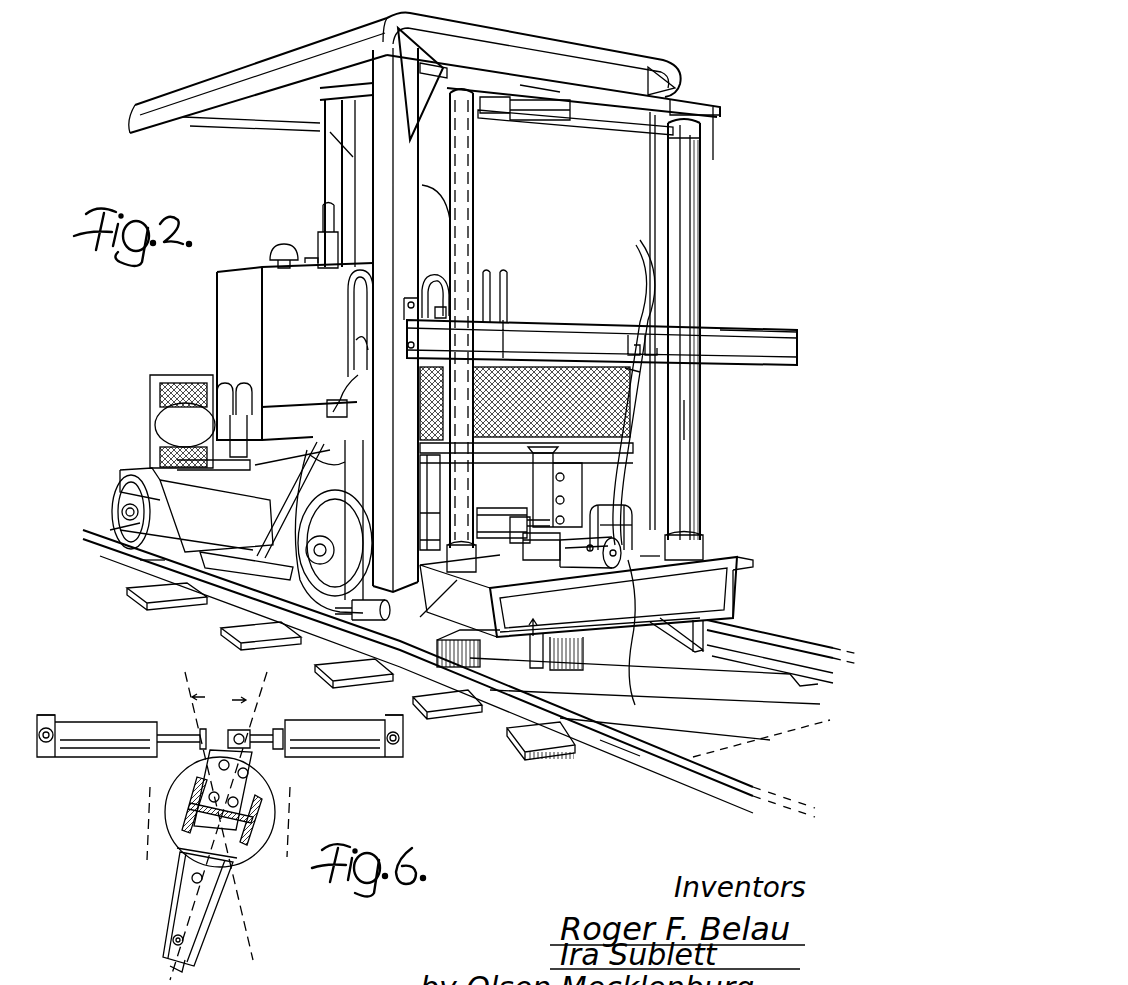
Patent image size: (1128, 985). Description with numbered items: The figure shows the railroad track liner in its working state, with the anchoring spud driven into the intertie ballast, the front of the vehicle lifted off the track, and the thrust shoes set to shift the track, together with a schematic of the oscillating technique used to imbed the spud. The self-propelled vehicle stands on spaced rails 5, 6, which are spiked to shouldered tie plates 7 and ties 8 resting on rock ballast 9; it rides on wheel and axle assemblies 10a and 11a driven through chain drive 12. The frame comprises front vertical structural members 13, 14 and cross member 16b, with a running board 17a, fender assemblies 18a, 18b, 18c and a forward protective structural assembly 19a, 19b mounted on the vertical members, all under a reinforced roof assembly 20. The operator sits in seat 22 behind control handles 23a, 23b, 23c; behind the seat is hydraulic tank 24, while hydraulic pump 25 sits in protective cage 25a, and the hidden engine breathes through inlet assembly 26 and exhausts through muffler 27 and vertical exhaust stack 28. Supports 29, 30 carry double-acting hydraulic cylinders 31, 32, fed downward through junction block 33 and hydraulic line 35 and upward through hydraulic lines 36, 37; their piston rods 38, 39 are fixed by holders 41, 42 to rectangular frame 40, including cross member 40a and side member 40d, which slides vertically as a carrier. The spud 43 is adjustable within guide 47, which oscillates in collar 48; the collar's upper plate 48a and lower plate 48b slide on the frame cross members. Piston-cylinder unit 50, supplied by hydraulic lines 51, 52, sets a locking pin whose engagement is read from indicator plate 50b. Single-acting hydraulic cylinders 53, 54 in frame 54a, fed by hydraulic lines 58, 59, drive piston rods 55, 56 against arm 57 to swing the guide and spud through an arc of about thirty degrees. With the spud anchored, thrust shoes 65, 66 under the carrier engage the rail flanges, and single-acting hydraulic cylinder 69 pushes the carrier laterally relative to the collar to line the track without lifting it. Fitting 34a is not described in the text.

In FIG. 2, the rail 5 is at (775, 640).
In FIG. 2, the rail 6 is at (622, 744).
In FIG. 2, the shouldered tie plate 7 is at (537, 747).
In FIG. 2, the tie 8 is at (645, 687).
In FIG. 2, the rock ballast 9 is at (742, 752).
In FIG. 2, the wheel and axle assembly 10a is at (246, 570).
In FIG. 2, the wheel and axle assembly 11a is at (157, 505).
In FIG. 2, the chain drive 12 is at (241, 526).
In FIG. 2, the vertical structural member 13 is at (413, 168).
In FIG. 2, the vertical structural member 14 is at (650, 182).
In FIG. 2, the cross member 16b is at (543, 90).
In FIG. 2, the running board 17a is at (153, 547).
In FIG. 2, the fender assembly 18a is at (130, 470).
In FIG. 2, the fender assembly 18b is at (140, 523).
In FIG. 2, the fender assembly 18c is at (312, 452).
In FIG. 2, the protective structural assembly 19a is at (462, 353).
In FIG. 2, the protective structural assembly 19b is at (722, 328).
In FIG. 2, the reinforced roof assembly 20 is at (287, 52).
In FIG. 2, the seat 22 is at (348, 303).
In FIG. 2, the control handle 23a is at (355, 350).
In FIG. 2, the control handle 23b is at (488, 270).
In FIG. 2, the control handle 23c is at (508, 276).
In FIG. 2, the tank 24 is at (217, 305).
In FIG. 2, the hydraulic pump 25 is at (153, 416).
In FIG. 2, the protective cage 25a is at (190, 375).
In FIG. 2, the inlet assembly 26 is at (270, 252).
In FIG. 2, the muffler 27 is at (318, 234).
In FIG. 2, the vertical exhaust stack 28 is at (325, 160).
In FIG. 2, the support 29 is at (426, 66).
In FIG. 2, the support 30 is at (637, 88).
In FIG. 2, the double-acting hydraulic cylinder 31 is at (515, 78).
In FIG. 2, the double-acting hydraulic cylinder 32 is at (682, 190).
In FIG. 2, the junction block 33 is at (543, 120).
In FIG. 2, the fitting 34a is at (312, 270).
In FIG. 2, the hydraulic line 35 is at (630, 128).
In FIG. 2, the hydraulic line 36 is at (426, 272).
In FIG. 2, the hydraulic line 37 is at (640, 288).
In FIG. 2, the piston rod 38 is at (470, 458).
In FIG. 2, the piston rod 39 is at (683, 420).
In FIG. 2, the rectangular frame 40 is at (583, 683).
In FIG. 2, the cross member 40a is at (482, 607).
In FIG. 2, the side member 40d is at (740, 590).
In FIG. 2, the holder 41 is at (447, 560).
In FIG. 2, the holder 42 is at (700, 540).
In FIG. 2, the spud 43 is at (540, 447).
In FIG. 6, the spud 43 is at (188, 805).
In FIG. 2, the guide 47 is at (540, 548).
In FIG. 6, the guide 47 is at (247, 850).
In FIG. 2, the collar 48 is at (525, 612).
In FIG. 2, the upper plate 48a is at (650, 560).
In FIG. 2, the lower plate 48b is at (652, 646).
In FIG. 2, the double-acting hydraulic piston-cylinder unit 50 is at (590, 570).
In FIG. 6, the double-acting hydraulic piston-cylinder unit 50 is at (192, 903).
In FIG. 2, the indicator plate 50b is at (616, 562).
In FIG. 6, the indicator plate 50b is at (165, 957).
In FIG. 2, the hydraulic line 51 is at (548, 567).
In FIG. 6, the hydraulic line 51 is at (192, 878).
In FIG. 2, the hydraulic line 52 is at (607, 530).
In FIG. 6, the hydraulic line 52 is at (185, 945).
In FIG. 2, the single-acting hydraulic cylinder 53 is at (483, 508).
In FIG. 6, the single-acting hydraulic cylinder 53 is at (88, 745).
In FIG. 6, the single-acting hydraulic cylinder 54 is at (342, 760).
In FIG. 2, the frame 54a is at (625, 522).
In FIG. 2, the piston rod 55 is at (517, 517).
In FIG. 6, the piston rod 55 is at (172, 734).
In FIG. 6, the piston rod 56 is at (256, 730).
In FIG. 6, the arm 57 is at (250, 780).
In FIG. 2, the hydraulic line 58 is at (422, 472).
In FIG. 6, the hydraulic line 58 is at (52, 718).
In FIG. 2, the hydraulic line 59 is at (633, 372).
In FIG. 6, the hydraulic line 59 is at (392, 755).
In FIG. 2, the thrust shoe 65 is at (448, 660).
In FIG. 2, the thrust shoe 66 is at (713, 622).
In FIG. 2, the single-acting hydraulic cylinder 69 is at (380, 603).